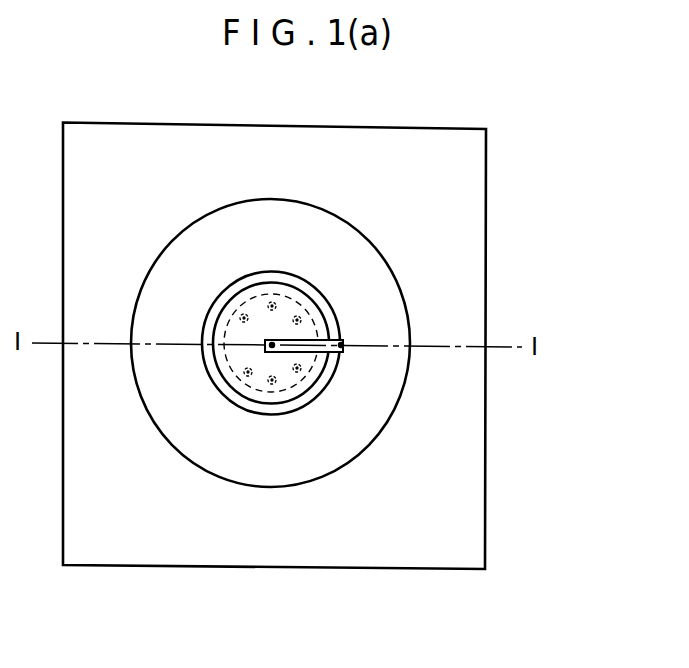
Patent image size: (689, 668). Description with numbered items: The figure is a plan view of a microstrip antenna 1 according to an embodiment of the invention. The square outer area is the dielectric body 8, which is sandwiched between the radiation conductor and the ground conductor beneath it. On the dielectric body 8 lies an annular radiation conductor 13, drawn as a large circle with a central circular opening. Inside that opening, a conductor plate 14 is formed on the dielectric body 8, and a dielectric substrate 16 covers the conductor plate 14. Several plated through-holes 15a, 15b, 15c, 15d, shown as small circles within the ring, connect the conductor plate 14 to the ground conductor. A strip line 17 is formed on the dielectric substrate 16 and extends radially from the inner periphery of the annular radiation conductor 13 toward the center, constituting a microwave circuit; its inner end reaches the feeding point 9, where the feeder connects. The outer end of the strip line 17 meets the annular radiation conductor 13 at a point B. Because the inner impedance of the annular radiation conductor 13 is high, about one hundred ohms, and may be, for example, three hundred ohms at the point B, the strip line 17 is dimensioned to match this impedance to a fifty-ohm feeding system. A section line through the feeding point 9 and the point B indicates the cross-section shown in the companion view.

The microstrip antenna 1 is at (499, 180).
The dielectric body 8 is at (448, 432).
The annular radiation conductor 13 is at (397, 313).
The conductor plate 14 is at (306, 284).
The dielectric substrate 16 is at (268, 292).
The plated through-hole 15a is at (215, 372).
The plated through-hole 15b is at (226, 299).
The plated through-hole 15c is at (246, 300).
The plated through-hole 15d is at (333, 385).
The strip line 17 is at (322, 324).
The feeding point 9 is at (272, 345).
The point B is at (342, 345).